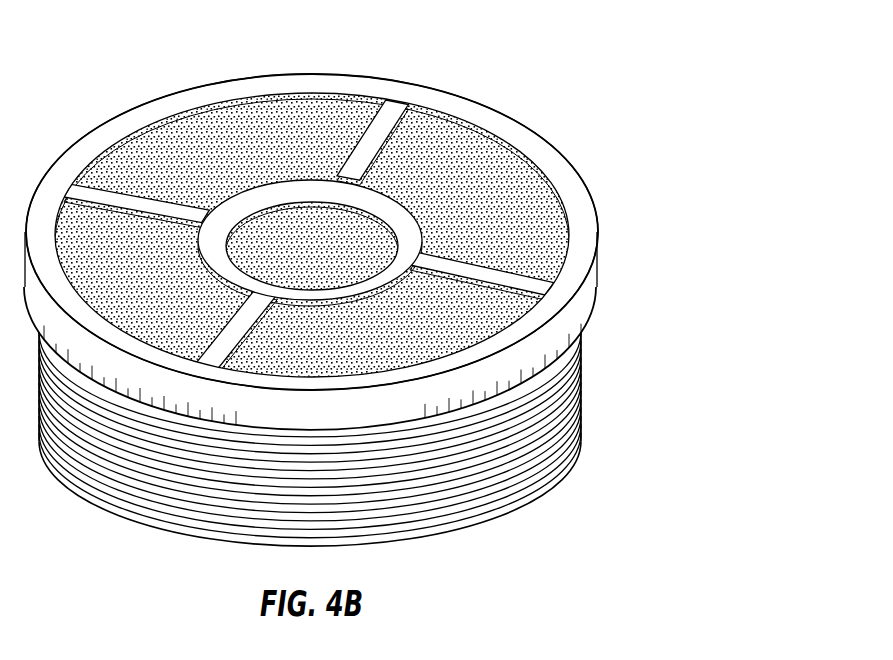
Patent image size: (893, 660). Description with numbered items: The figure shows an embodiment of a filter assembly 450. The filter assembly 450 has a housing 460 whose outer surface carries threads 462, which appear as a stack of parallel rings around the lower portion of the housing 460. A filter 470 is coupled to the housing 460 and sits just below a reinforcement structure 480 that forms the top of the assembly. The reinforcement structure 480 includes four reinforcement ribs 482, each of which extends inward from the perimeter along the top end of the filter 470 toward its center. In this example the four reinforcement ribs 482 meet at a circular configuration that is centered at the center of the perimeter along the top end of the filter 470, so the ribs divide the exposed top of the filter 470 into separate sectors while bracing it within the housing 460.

The filter assembly 450 is at (363, 287).
The housing 460 is at (206, 539).
The threads 462 is at (567, 416).
The filter 470 is at (467, 163).
The reinforcement structure 480 is at (603, 270).
The reinforcement ribs 482 is at (380, 133).